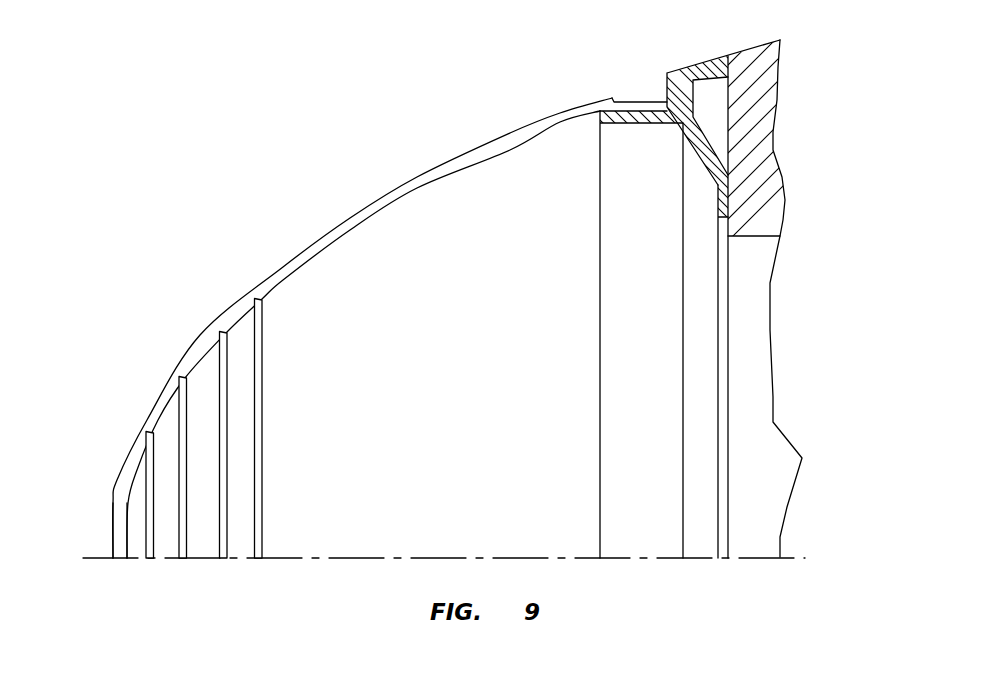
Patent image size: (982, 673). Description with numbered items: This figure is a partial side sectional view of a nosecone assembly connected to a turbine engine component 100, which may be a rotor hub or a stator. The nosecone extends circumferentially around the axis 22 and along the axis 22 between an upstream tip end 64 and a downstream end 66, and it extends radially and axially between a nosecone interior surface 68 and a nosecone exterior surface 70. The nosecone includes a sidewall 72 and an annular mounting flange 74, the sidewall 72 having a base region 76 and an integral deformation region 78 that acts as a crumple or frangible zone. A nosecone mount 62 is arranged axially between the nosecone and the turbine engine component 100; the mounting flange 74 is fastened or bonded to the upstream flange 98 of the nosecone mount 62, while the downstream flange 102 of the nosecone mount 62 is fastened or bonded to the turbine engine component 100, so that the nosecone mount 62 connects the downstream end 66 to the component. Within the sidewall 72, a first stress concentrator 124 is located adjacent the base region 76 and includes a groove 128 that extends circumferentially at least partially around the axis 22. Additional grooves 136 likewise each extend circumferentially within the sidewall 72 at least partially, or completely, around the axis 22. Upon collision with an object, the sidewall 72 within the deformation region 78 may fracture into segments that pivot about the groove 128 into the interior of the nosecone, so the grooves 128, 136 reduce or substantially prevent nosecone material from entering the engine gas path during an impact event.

The axis 22 is at (812, 556).
The nosecone mount 62 is at (699, 62).
The upstream tip end 64 is at (120, 558).
The downstream end 66 is at (666, 101).
The nosecone interior surface 68 is at (485, 163).
The nosecone exterior surface 70 is at (492, 146).
The sidewall 72 is at (390, 316).
The mounting flange 74 is at (638, 101).
The base region 76 is at (612, 68).
The deformation region 78 is at (260, 70).
The upstream flange 98 is at (622, 123).
The turbine engine component 100 is at (779, 114).
The downstream flange 102 is at (717, 203).
The first stress concentrator 124 is at (305, 455).
The groove 128 is at (260, 558).
The grooves 136 is at (222, 558).